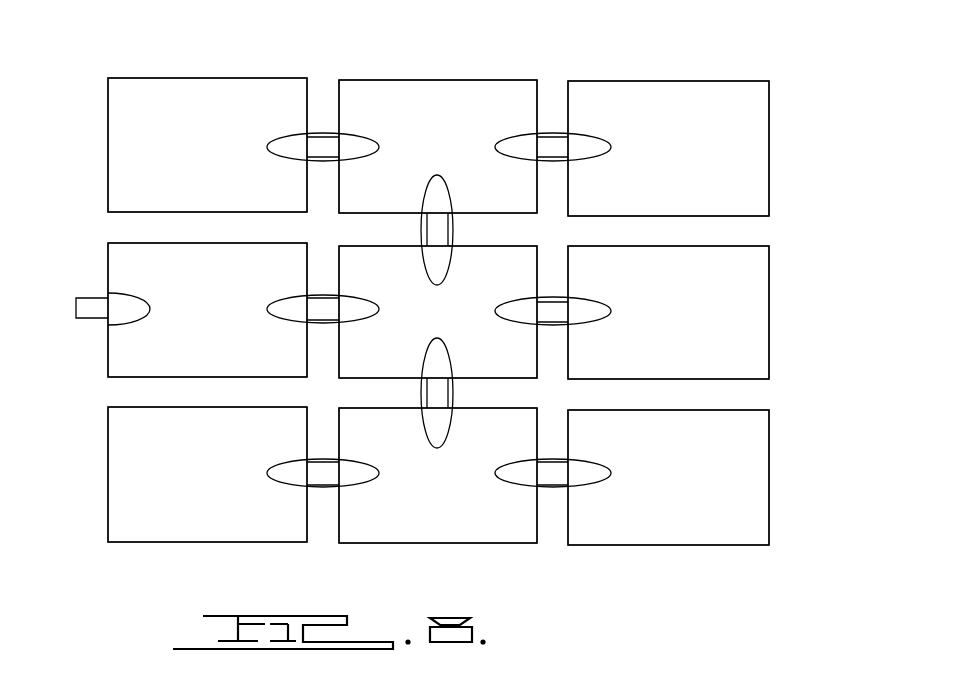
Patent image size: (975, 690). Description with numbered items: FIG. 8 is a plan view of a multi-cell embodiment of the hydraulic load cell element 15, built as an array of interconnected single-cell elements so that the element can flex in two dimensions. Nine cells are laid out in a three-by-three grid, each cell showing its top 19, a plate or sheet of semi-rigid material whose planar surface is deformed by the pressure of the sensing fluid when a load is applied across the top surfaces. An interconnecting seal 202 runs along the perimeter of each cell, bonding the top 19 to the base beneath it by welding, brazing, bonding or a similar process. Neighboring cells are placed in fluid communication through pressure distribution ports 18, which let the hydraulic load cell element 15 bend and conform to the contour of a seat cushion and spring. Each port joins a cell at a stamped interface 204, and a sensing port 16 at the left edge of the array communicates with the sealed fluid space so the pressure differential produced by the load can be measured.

The hydraulic load cell element 15 is at (98, 49).
The sensing port 16 is at (85, 318).
The pressure distribution port 18 is at (323, 137).
The top 19 is at (118, 141).
The interconnecting seal 202 is at (198, 78).
The interface for the sensing port 204 is at (270, 147).